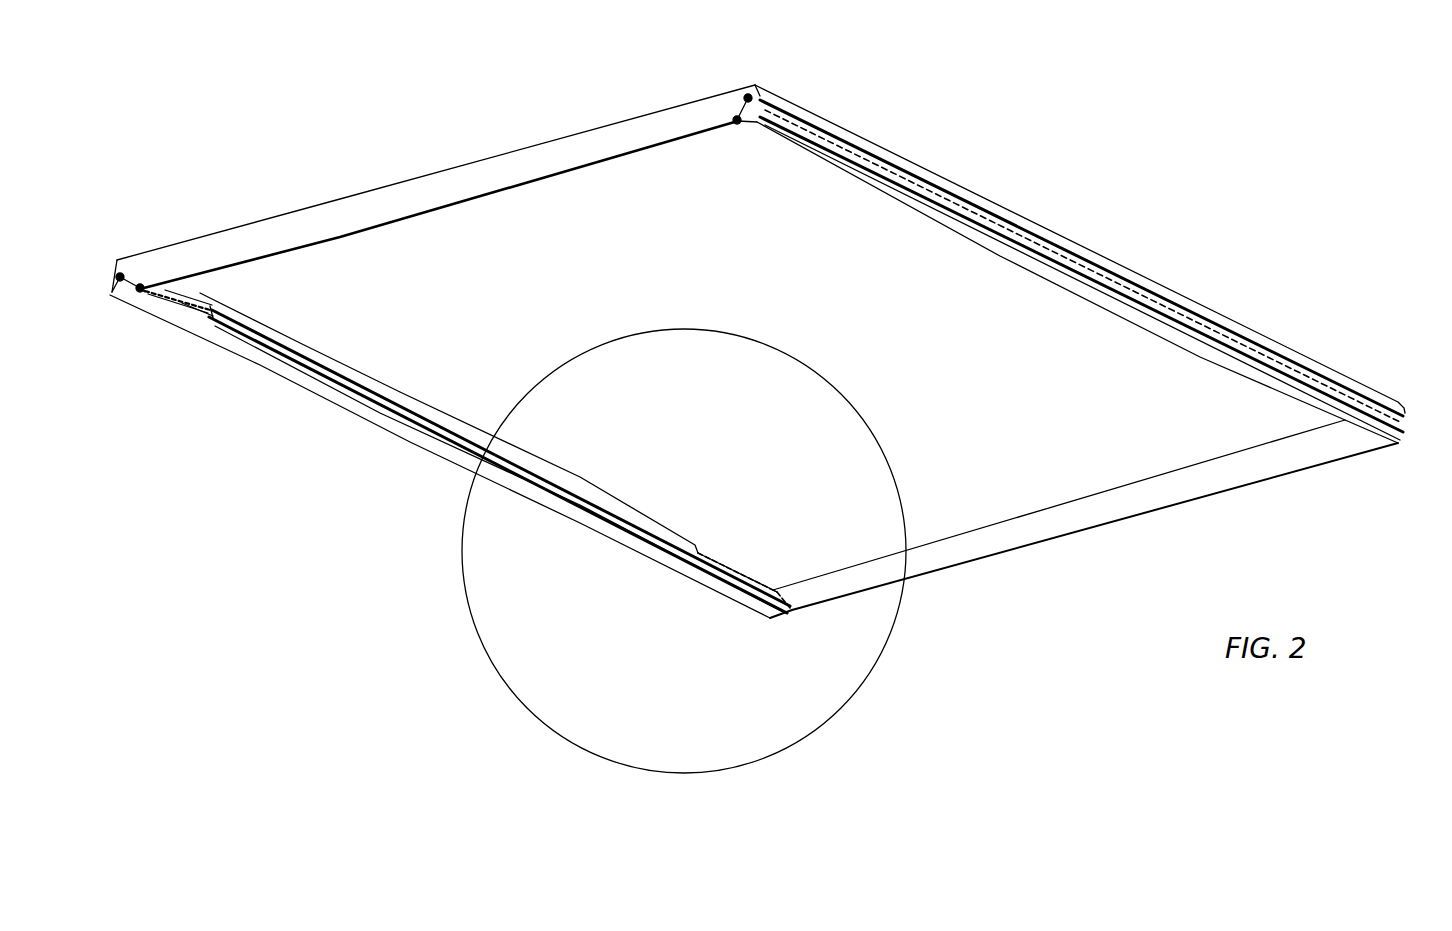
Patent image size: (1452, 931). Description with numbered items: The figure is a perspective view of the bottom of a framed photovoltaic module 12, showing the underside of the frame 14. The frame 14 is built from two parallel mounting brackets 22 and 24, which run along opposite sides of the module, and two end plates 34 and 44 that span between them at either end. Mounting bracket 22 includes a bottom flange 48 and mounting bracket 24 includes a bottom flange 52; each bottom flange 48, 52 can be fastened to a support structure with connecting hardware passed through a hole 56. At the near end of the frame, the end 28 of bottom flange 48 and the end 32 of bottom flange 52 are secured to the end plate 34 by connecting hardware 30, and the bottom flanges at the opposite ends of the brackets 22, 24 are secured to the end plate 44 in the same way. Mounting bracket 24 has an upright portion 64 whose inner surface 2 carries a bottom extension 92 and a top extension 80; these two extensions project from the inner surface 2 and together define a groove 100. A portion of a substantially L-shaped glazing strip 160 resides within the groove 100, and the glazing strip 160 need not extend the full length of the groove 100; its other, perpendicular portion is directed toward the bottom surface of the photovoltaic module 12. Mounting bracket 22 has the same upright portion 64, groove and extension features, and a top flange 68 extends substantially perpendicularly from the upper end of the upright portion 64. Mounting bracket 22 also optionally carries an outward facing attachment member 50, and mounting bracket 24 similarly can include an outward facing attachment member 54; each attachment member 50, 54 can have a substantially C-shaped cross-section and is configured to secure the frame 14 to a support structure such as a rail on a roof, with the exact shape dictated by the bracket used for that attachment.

The inner surface 2 is at (490, 445).
The photovoltaic module 12 is at (412, 263).
The frame 14 is at (630, 138).
The mounting bracket 22 is at (940, 180).
The mounting bracket 24 is at (387, 420).
The end 28 is at (745, 125).
The connecting hardware 30 is at (140, 288).
The end 32 is at (140, 293).
The end plate 34 is at (478, 183).
The end plate 44 is at (1020, 535).
The bottom flange 48 is at (990, 245).
The outward facing attachment member 50 is at (777, 105).
The bottom flange 52 is at (327, 393).
The outward facing attachment member 54 is at (119, 290).
The hole 56 is at (905, 200).
The upright portion 64 is at (180, 305).
The top flange 68 is at (225, 317).
The top extension 80 is at (182, 303).
The bottom extension 92 is at (165, 290).
The groove 100 is at (712, 560).
The glazing strip 160 is at (295, 350).